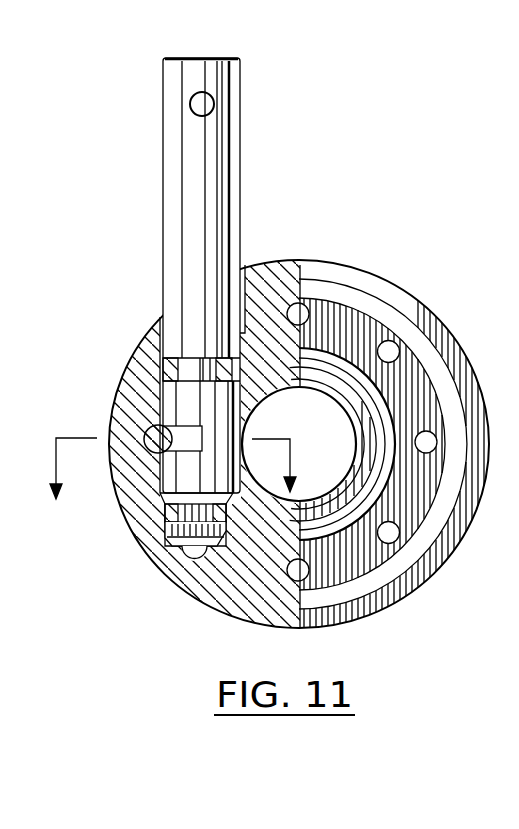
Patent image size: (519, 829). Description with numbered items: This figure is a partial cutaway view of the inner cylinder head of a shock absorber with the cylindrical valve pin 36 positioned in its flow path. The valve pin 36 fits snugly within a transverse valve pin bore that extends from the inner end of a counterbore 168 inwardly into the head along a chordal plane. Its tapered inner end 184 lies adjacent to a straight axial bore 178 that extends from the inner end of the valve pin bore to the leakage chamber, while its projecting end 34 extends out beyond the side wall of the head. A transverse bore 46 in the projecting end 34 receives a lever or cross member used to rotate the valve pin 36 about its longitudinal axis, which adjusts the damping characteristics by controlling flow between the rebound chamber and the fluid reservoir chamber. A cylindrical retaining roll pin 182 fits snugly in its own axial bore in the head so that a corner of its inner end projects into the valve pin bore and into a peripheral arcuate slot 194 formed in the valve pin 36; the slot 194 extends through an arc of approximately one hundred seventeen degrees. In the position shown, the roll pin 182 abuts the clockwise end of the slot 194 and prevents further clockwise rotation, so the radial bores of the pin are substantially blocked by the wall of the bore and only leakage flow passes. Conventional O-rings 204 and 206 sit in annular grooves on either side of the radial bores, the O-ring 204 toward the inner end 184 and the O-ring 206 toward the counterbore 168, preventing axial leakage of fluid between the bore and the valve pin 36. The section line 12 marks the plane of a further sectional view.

The section line 12- 12 is at (176, 468).
The projecting end 34 is at (233, 66).
The cylindrical valve pin 36 is at (210, 199).
The transverse bore 46 is at (206, 96).
The counterbore 168 is at (235, 261).
The axial bore 178 is at (197, 546).
The retaining roll pin 182 is at (136, 427).
The tapered inner end 184 is at (157, 532).
The peripheral arcuate slot 194 is at (150, 394).
The O-ring 204 is at (157, 500).
The O-ring 206 is at (155, 360).